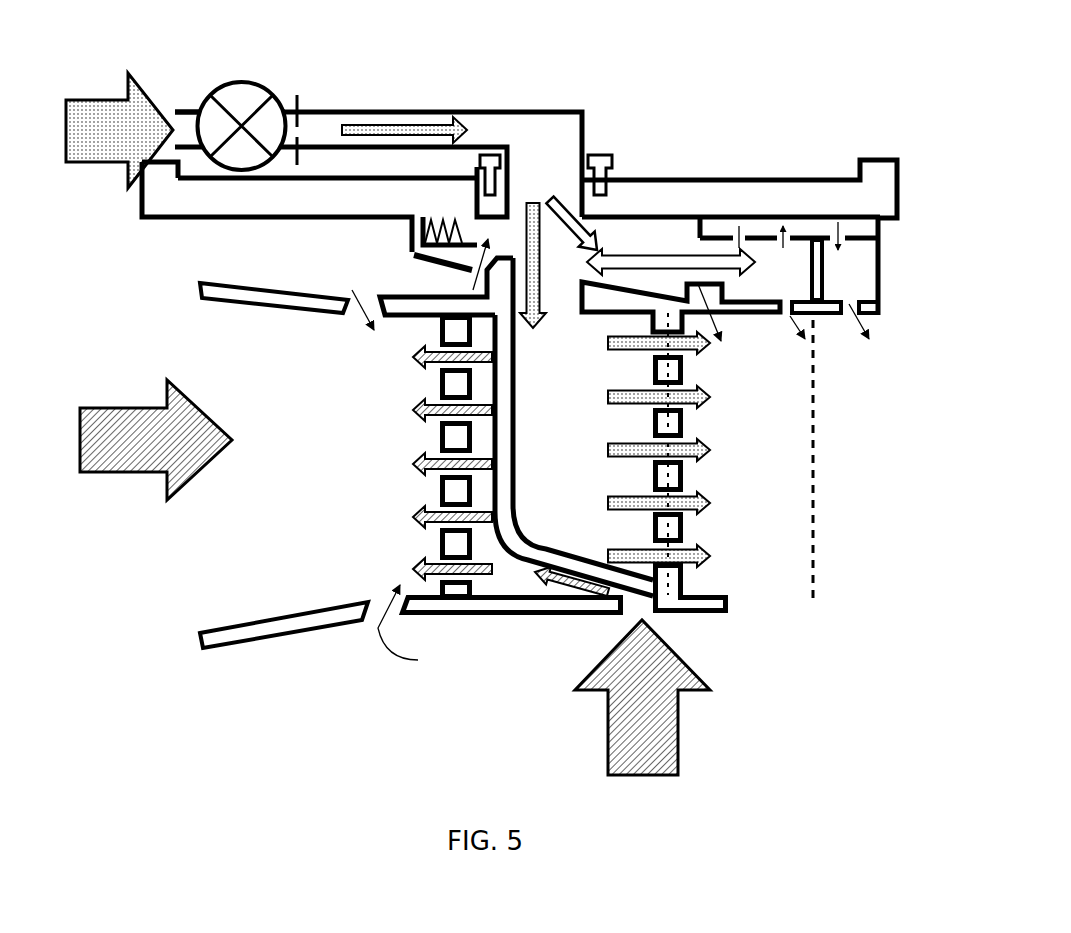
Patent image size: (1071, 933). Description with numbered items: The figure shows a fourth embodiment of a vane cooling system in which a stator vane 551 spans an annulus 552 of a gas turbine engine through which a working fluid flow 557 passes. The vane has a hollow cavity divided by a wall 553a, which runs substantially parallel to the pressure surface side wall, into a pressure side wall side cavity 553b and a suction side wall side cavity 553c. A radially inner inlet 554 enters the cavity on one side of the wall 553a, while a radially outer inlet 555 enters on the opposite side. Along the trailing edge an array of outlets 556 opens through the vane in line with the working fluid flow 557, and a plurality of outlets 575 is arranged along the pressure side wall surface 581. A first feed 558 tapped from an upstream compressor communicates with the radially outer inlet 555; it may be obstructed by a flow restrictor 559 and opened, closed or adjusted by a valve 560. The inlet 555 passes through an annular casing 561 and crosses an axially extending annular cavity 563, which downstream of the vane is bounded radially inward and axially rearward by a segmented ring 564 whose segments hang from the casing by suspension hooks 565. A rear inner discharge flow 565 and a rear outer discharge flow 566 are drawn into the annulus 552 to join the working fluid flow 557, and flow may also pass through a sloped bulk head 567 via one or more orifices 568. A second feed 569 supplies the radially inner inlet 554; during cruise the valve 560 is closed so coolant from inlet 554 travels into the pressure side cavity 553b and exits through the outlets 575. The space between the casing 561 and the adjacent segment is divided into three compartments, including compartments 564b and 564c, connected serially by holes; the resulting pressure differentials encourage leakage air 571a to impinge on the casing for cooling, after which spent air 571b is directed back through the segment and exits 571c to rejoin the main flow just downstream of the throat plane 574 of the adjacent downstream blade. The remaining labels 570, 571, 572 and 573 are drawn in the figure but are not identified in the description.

The stator vane 551 is at (440, 437).
The annulus 552 is at (275, 410).
The wall 553a is at (505, 398).
The pressure side wall side cavity 553b is at (507, 572).
The suction side wall side cavity 553c is at (528, 452).
The radially inner inlet 554 is at (633, 603).
The radially outer inlet 555 is at (570, 167).
The array of outlets 556 is at (672, 487).
The working fluid flow 557 is at (102, 407).
The first feed 558 is at (80, 112).
The flow restrictor 559 is at (300, 102).
The valve 560 is at (235, 95).
The annular casing 561 is at (660, 193).
The axially extending annular cavity 563 is at (616, 251).
The segmented ring 564 is at (753, 283).
The second compartment 564b is at (853, 225).
The third compartment 564c is at (857, 267).
The suspension hooks 565 is at (867, 228).
The rear outer discharge flow 566 is at (352, 290).
The sloped bulk head 567 is at (440, 252).
The orifice 568 is at (475, 274).
The second feed 569 is at (410, 360).
The base of heat exchanger 570 is at (690, 583).
The air outlet flow 571 is at (723, 338).
The leakage air 571a is at (727, 226).
The spent air 571b is at (837, 223).
The exit 571c is at (852, 328).
The hood 572 is at (723, 284).
The mixing chamber 573 is at (782, 300).
The throat plane 574 is at (815, 510).
The outlets 575 is at (450, 492).
The pressure side wall surface 581 is at (468, 329).